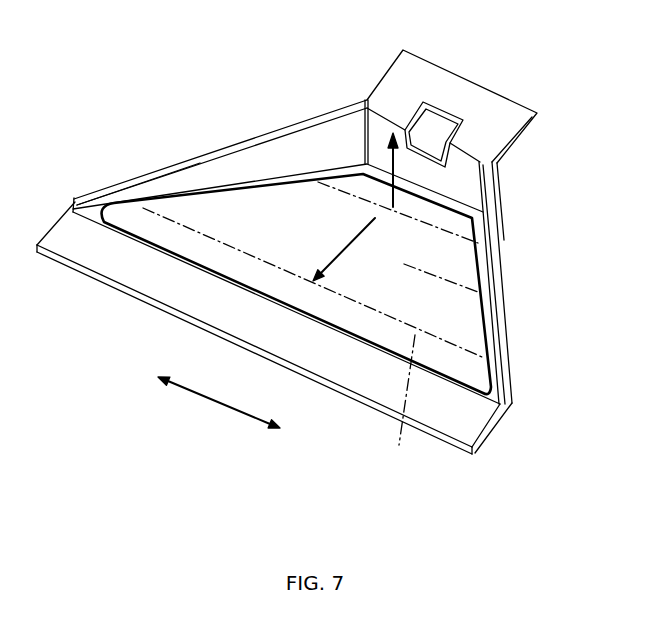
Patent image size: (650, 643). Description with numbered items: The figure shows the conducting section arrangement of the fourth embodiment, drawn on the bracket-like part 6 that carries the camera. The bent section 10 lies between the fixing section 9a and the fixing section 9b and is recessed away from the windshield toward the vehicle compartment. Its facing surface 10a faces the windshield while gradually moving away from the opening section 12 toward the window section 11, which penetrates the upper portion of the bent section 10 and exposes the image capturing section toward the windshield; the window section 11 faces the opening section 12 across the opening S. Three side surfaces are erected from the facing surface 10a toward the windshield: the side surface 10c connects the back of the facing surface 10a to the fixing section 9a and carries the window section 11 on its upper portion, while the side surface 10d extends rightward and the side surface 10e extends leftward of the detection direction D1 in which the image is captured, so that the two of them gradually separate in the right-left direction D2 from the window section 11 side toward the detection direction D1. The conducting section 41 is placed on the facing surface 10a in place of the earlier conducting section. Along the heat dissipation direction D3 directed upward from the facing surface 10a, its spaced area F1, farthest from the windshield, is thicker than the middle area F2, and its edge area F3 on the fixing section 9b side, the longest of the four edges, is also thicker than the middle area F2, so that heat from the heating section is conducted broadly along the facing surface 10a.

The window frame member 6 is at (110, 118).
The fixing section 9a is at (493, 110).
The fixing section 9b is at (147, 287).
The bent section 10 is at (392, 178).
The facing surface 10a is at (93, 217).
The side surface 10c is at (382, 138).
The side surface 10d is at (263, 160).
The side surface 10e is at (478, 217).
The window section 11 is at (427, 155).
The opening section 12 is at (298, 119).
The conducting section 41 is at (230, 222).
The opening S is at (465, 320).
The detection direction D1 is at (348, 249).
The right-left direction D2 is at (219, 406).
The heat dissipation direction D3 is at (408, 170).
The spaced area F1 is at (512, 241).
The middle area F2 is at (512, 298).
The edge area F3 is at (400, 402).